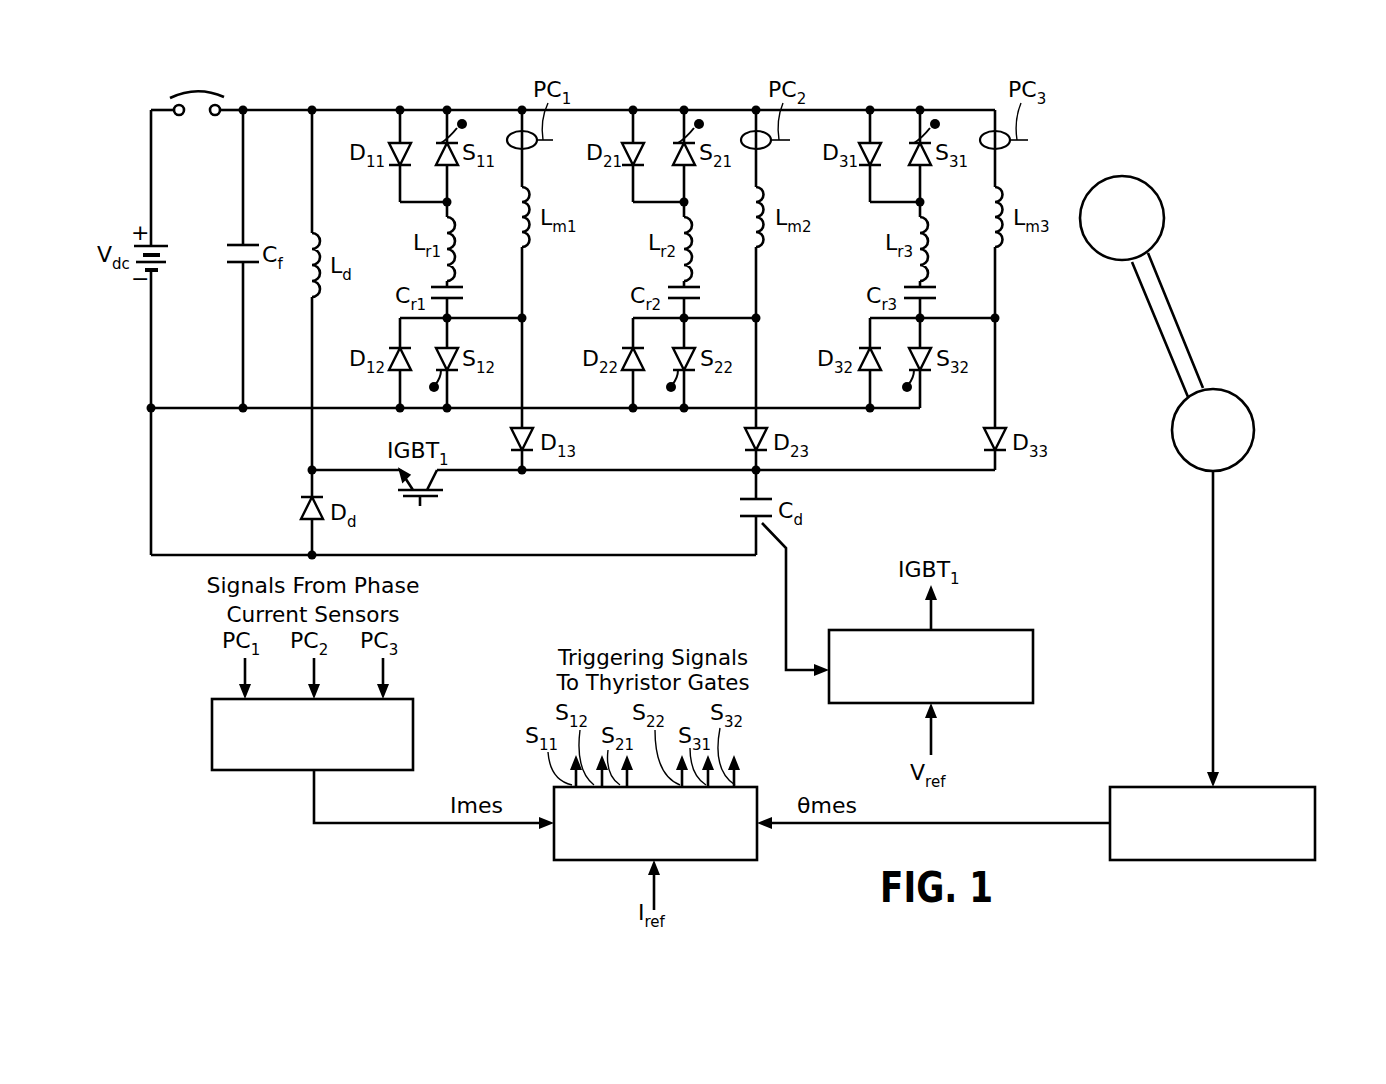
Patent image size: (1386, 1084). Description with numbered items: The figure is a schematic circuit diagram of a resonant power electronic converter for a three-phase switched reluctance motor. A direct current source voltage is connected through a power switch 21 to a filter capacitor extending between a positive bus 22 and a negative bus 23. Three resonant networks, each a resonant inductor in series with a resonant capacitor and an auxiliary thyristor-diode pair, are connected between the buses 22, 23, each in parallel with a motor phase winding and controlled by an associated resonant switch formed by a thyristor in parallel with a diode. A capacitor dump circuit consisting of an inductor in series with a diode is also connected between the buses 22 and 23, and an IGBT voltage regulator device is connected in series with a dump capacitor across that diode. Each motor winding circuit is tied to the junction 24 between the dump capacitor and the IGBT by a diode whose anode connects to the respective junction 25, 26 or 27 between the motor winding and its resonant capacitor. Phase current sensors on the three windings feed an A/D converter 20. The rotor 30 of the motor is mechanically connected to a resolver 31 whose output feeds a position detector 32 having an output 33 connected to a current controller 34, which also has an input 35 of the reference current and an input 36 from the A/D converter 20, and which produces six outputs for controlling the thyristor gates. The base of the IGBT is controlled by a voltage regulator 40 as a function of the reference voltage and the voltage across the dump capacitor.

The A/D converter 20 is at (243, 773).
The power switch 21 is at (190, 120).
The positive bus 22 is at (276, 108).
The negative bus 23 is at (175, 412).
The junction 24 is at (754, 478).
The junction 25 is at (527, 321).
The junction 26 is at (761, 321).
The junction 27 is at (1000, 322).
The rotor 30 is at (1142, 180).
The resolver 31 is at (1250, 400).
The position detector 32 is at (1287, 786).
The output 33 is at (1053, 822).
The current controller 34 is at (735, 862).
The input 35 is at (650, 867).
The input 36 is at (337, 826).
The voltage regulator 40 is at (1033, 657).